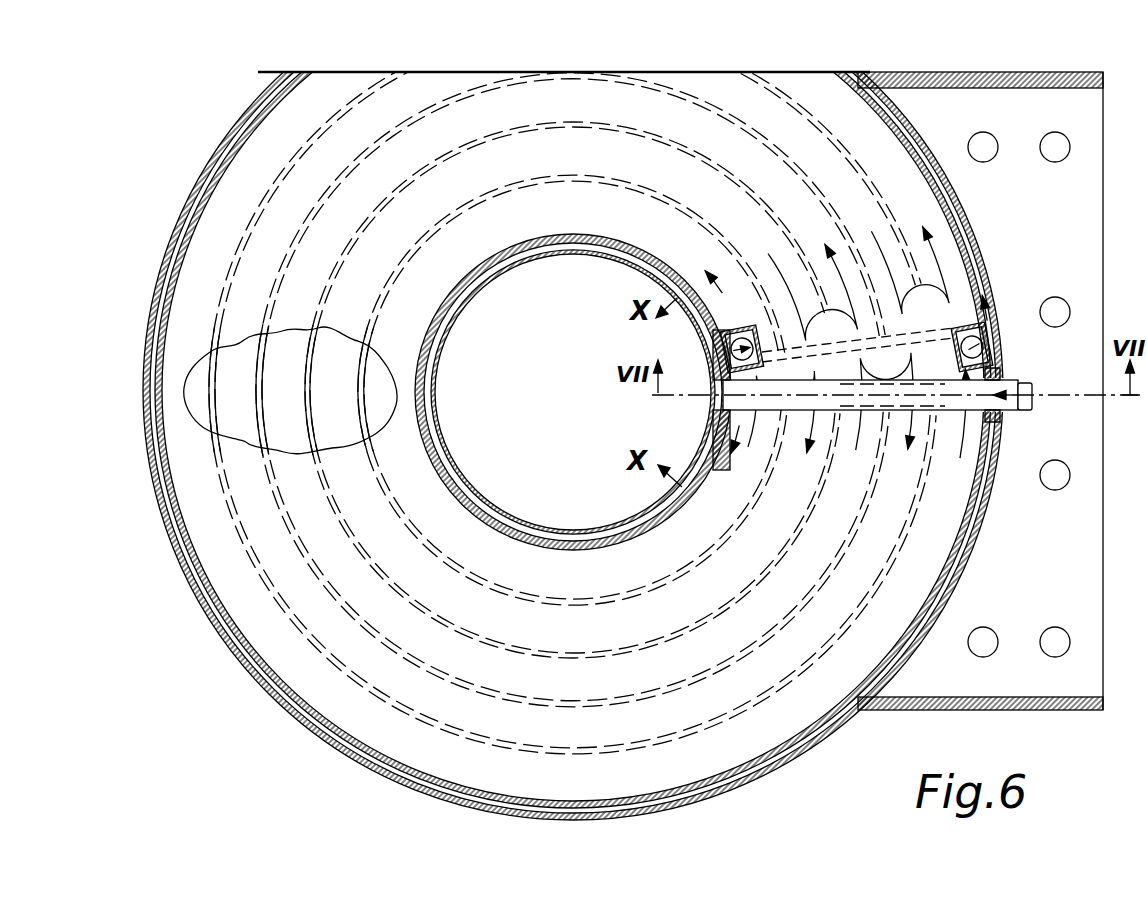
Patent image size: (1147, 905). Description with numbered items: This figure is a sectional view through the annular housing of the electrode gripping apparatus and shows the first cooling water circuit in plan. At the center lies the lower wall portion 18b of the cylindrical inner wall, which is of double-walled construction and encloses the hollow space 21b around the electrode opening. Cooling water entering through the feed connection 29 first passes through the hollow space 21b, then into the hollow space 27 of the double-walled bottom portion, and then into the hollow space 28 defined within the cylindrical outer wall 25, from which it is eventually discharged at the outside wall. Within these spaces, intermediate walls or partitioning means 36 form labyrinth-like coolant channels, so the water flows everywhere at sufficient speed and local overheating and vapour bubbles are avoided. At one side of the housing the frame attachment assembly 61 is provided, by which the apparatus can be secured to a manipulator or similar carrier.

The cylindrical outer wall 25 is at (212, 158).
The hollow space 27 is at (238, 360).
The hollow space 28 is at (148, 397).
The partitioning means 36 is at (262, 424).
The hollow space 21b is at (432, 384).
The lower wall portion of the inner wall 18b is at (478, 503).
The feed connection 29 is at (1026, 412).
The frame attachment assembly 61 is at (1083, 212).